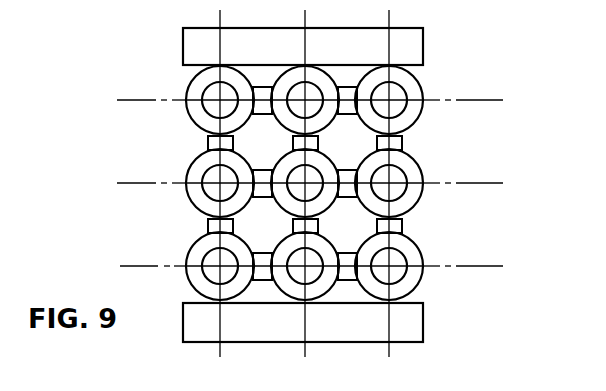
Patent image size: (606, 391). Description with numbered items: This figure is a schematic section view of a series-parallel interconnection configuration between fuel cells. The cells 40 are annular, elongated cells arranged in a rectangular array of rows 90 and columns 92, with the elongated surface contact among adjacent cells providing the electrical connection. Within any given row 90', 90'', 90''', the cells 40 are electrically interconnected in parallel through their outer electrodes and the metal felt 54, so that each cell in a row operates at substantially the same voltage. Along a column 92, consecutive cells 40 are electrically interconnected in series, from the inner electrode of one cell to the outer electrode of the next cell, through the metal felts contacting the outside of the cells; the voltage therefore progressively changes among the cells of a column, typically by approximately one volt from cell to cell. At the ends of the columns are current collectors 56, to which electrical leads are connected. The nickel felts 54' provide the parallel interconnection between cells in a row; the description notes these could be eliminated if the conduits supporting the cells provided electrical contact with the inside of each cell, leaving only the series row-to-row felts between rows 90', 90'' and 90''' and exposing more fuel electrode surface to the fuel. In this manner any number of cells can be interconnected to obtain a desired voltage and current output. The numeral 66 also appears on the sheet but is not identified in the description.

The column 92 is at (305, 178).
The cooling coil assembly 66 is at (47, 6).
The current collector 56 is at (416, 38).
The row 90''' is at (309, 102).
The row 90'' is at (310, 184).
The row 90' is at (311, 268).
The row 90 is at (478, 208).
The cell 40 is at (406, 163).
The metal felt 54 is at (277, 185).
The nickel felt 54' is at (309, 183).